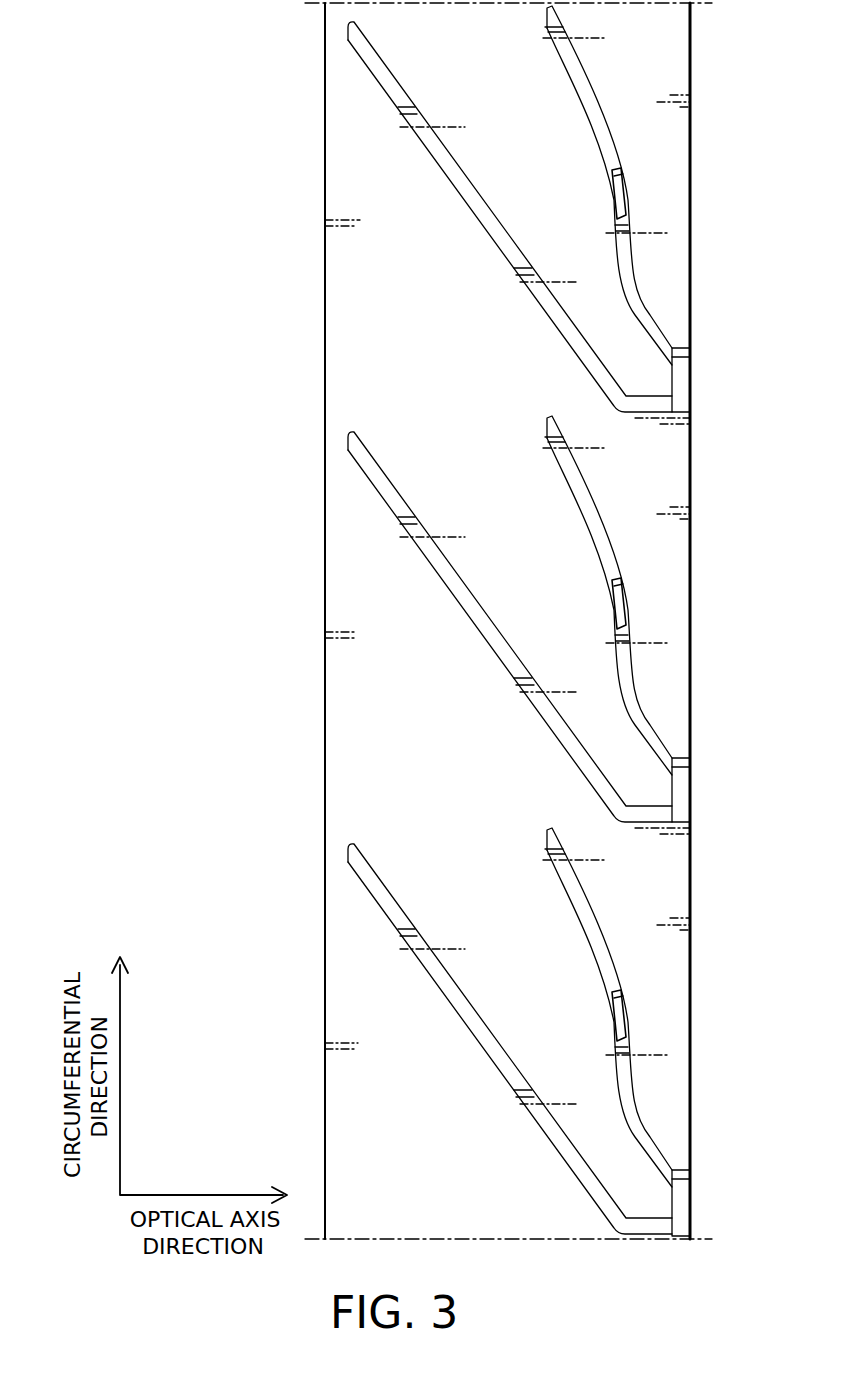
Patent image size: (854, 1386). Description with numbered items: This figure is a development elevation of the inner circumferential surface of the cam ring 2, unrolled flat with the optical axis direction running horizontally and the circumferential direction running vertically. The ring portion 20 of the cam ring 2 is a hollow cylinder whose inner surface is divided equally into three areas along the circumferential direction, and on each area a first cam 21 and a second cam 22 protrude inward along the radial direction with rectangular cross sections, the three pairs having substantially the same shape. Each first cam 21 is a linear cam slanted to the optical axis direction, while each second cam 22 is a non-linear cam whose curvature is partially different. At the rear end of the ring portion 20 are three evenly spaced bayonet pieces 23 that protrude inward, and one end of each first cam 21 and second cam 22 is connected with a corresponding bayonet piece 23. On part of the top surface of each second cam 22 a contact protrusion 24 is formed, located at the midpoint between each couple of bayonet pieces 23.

The cam ring 2 is at (692, 53).
The ring portion 20 is at (347, 730).
The first cam 21 is at (373, 74).
The second cam 22 is at (595, 99).
The bayonet piece 23 is at (685, 387).
The contact protrusion 24 is at (623, 199).